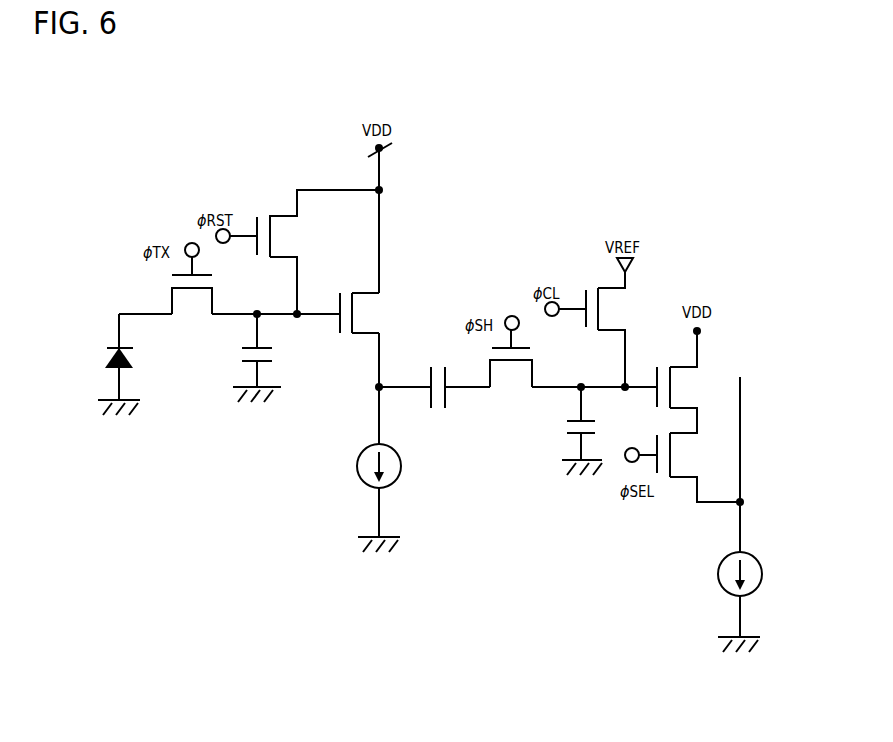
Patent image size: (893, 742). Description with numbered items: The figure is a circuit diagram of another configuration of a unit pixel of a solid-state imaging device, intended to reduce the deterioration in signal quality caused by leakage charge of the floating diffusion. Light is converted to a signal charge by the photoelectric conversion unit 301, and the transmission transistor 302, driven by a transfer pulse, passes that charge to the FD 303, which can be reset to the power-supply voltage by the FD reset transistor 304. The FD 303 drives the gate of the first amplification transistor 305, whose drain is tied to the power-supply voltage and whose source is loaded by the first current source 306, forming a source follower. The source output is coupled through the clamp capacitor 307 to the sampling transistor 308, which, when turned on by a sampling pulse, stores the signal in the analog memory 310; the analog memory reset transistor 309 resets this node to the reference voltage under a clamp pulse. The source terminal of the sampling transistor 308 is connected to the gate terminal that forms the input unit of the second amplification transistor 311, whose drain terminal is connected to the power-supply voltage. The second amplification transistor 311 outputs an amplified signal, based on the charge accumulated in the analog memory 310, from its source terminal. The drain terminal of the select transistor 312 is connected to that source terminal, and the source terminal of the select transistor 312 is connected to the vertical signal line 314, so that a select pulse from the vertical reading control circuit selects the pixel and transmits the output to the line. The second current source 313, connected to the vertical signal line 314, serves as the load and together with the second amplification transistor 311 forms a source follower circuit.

The photoelectric conversion unit 301 is at (105, 354).
The transmission transistor 302 is at (172, 300).
The FD 303 is at (240, 359).
The FD reset transistor 304 is at (287, 212).
The first amplification transistor 305 is at (366, 289).
The first current source 306 is at (402, 466).
The clamp capacitor 307 is at (432, 378).
The sampling transistor 308 is at (532, 372).
The analog memory reset transistor 309 is at (603, 285).
The analog memory 310 is at (566, 432).
The second amplification transistor 311 is at (685, 365).
The select transistor 312 is at (681, 479).
The second current source 313 is at (718, 578).
The vertical signal line 314 is at (741, 420).